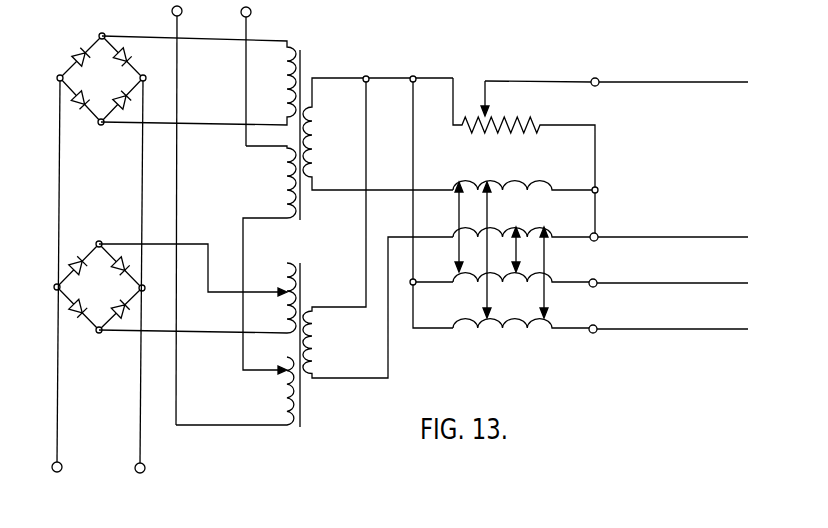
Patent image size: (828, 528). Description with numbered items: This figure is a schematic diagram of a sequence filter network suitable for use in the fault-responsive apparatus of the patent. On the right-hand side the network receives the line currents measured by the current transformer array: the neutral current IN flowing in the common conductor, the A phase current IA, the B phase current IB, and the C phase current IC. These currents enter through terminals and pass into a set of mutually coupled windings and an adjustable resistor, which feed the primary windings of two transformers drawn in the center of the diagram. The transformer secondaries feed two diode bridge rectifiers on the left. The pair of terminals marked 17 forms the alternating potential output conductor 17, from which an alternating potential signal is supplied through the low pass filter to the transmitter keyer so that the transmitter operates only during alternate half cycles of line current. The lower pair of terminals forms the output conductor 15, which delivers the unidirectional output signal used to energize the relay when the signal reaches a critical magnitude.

The output conductor 15 is at (139, 447).
The alternating potential output conductor 17 is at (243, 23).
The neutral current IN is at (624, 96).
The A phase current IA is at (624, 251).
The B phase current IB is at (624, 297).
The C phase current IC is at (624, 342).